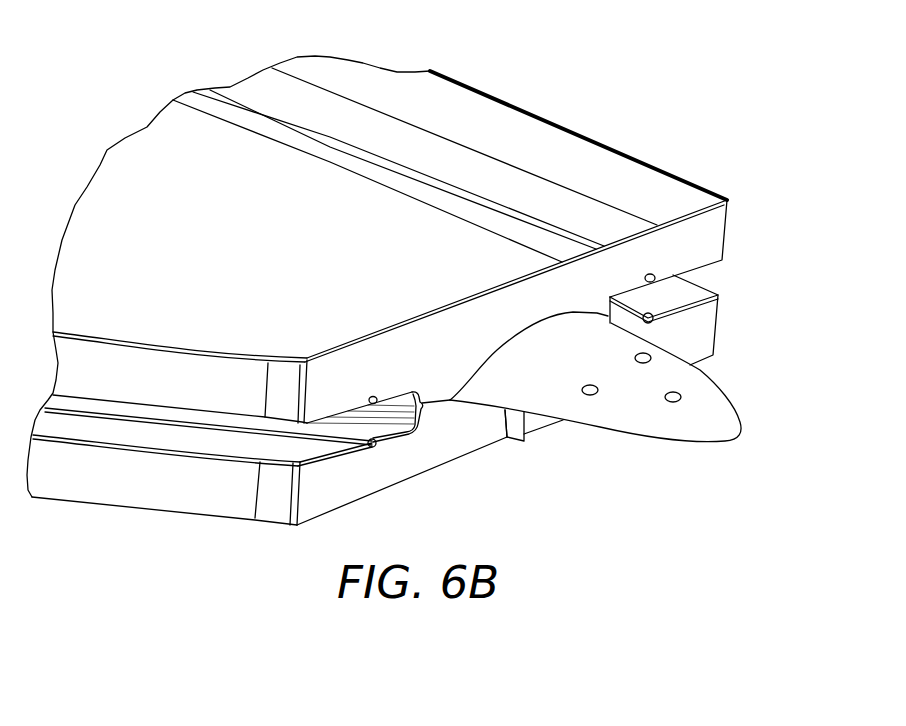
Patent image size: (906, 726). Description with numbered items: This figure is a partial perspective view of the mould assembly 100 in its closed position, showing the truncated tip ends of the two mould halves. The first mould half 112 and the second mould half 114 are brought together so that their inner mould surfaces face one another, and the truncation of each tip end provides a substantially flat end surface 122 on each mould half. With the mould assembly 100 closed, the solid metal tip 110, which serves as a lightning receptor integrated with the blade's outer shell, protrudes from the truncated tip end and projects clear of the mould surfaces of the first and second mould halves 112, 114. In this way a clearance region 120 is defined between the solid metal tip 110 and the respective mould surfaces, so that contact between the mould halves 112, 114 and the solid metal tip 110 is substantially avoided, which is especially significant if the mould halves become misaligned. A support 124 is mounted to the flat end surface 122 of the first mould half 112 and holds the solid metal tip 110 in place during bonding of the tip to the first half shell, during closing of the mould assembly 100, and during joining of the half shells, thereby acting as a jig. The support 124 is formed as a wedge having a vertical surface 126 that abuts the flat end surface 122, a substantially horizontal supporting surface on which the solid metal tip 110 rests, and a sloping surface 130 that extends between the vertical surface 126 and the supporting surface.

The mould assembly 100 is at (410, 293).
The solid metal tip 110 is at (715, 400).
The first mould half 112 is at (713, 318).
The second mould half 114 is at (713, 232).
The clearance region 120 is at (603, 452).
The flat end surface 122 is at (358, 362).
The support 124 is at (522, 432).
The vertical surface 126 is at (503, 420).
The sloping surface 130 is at (543, 432).